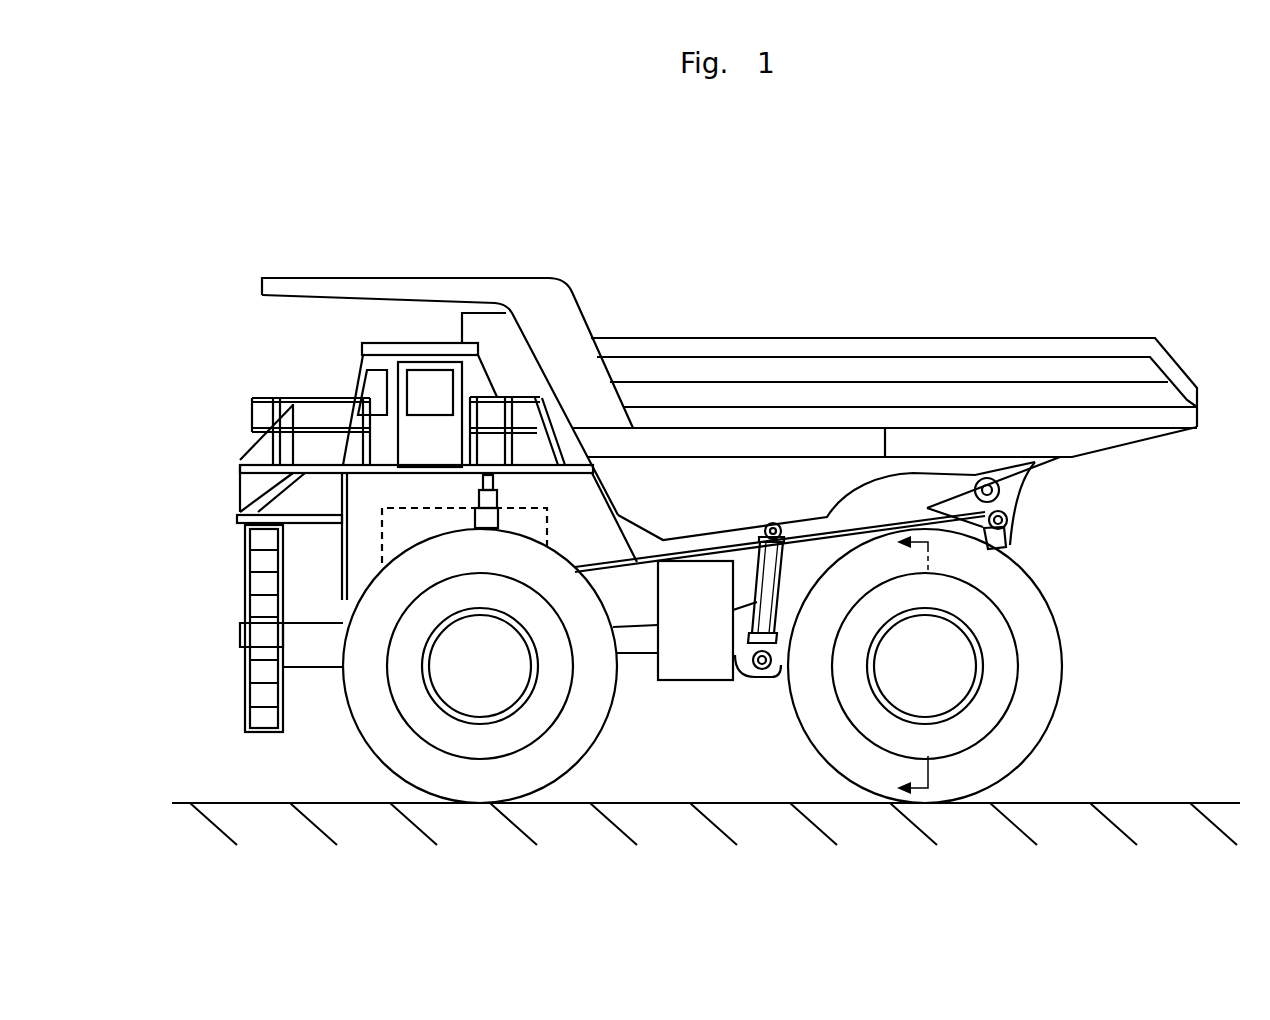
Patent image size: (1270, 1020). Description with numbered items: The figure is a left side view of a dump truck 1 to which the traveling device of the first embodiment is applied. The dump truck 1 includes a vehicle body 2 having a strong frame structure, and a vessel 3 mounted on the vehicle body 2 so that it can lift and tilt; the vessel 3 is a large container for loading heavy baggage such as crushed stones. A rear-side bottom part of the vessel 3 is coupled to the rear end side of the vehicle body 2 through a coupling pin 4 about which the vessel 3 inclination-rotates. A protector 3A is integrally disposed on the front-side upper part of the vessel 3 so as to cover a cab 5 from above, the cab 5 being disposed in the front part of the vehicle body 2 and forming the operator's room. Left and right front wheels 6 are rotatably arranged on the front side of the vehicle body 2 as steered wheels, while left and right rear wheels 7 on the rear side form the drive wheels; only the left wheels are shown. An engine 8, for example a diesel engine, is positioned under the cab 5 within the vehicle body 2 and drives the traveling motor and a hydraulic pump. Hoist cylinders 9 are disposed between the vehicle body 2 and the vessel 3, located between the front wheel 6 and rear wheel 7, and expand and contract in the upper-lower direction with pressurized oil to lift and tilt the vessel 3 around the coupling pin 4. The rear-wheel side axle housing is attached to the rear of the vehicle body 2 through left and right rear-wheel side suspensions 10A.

The dump truck 1 is at (645, 288).
The vehicle body 2 is at (637, 600).
The vessel 3 is at (885, 376).
The protector 3A is at (398, 287).
The coupling pin 4 is at (1000, 493).
The cab 5 is at (373, 383).
The front wheel 6 is at (480, 785).
The rear wheel 7 is at (975, 765).
The engine 8 is at (407, 527).
The hoist cylinder 9 is at (766, 577).
The rear-wheel side suspension 10A is at (1012, 540).